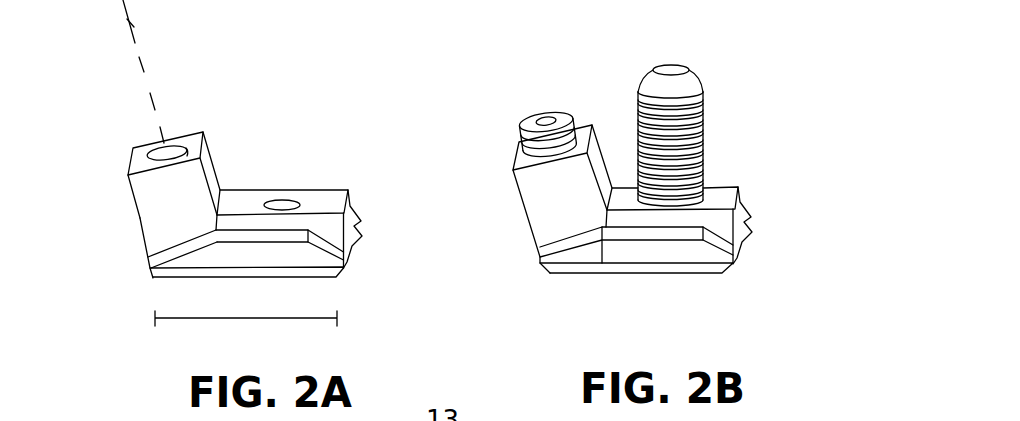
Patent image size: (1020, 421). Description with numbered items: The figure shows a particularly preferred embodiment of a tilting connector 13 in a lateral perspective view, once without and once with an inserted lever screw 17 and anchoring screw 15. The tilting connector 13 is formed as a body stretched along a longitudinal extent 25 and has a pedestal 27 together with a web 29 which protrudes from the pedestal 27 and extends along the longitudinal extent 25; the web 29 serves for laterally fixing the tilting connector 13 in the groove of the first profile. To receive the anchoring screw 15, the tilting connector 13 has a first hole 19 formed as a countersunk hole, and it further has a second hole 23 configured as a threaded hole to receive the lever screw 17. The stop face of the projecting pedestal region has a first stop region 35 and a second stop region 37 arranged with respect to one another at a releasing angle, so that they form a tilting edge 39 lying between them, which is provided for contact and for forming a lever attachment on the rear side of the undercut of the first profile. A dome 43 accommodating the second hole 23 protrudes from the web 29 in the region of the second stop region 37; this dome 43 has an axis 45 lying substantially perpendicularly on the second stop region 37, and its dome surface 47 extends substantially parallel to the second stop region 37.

In FIG. 2A, the tilting connector 13 is at (248, 183).
In FIG. 2B, the tilting connector 13 is at (605, 185).
In FIG. 2B, the anchoring screw 15 is at (685, 82).
In FIG. 2B, the lever screw 17 is at (552, 110).
In FIG. 2A, the first hole 19 is at (285, 200).
In FIG. 2A, the second hole 23 is at (170, 145).
In FIG. 2A, the longitudinal extent 25 is at (215, 318).
In FIG. 2A, the pedestal 27 is at (273, 250).
In FIG. 2B, the pedestal 27 is at (636, 293).
In FIG. 2A, the web 29 is at (348, 192).
In FIG. 2B, the web 29 is at (741, 190).
In FIG. 2A, the first stop region 35 is at (227, 228).
In FIG. 2B, the first stop region 35 is at (667, 241).
In FIG. 2A, the second stop region 37 is at (166, 250).
In FIG. 2A, the tilting edge 39 is at (214, 243).
In FIG. 2B, the tilting edge 39 is at (602, 263).
In FIG. 2A, the dome 43 is at (138, 185).
In FIG. 2B, the dome 43 is at (542, 203).
In FIG. 2A, the axis 45 is at (132, 23).
In FIG. 2A, the dome surface 47 is at (190, 142).